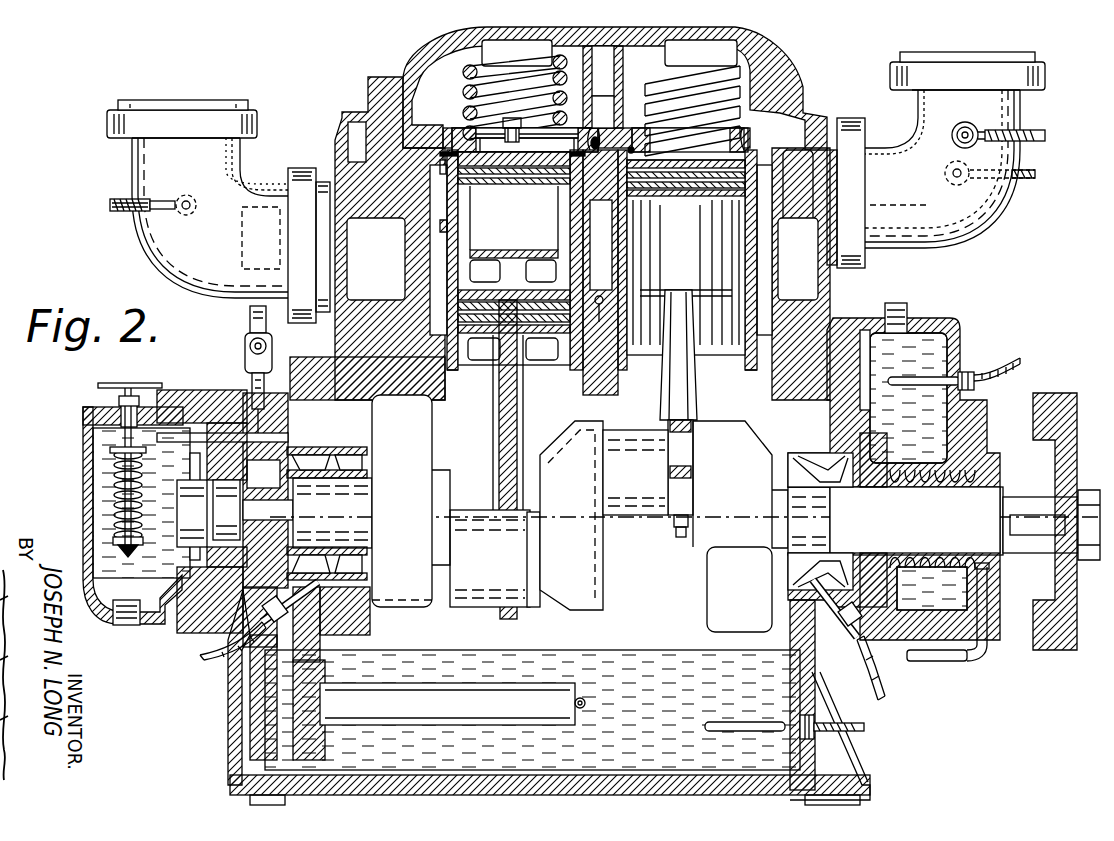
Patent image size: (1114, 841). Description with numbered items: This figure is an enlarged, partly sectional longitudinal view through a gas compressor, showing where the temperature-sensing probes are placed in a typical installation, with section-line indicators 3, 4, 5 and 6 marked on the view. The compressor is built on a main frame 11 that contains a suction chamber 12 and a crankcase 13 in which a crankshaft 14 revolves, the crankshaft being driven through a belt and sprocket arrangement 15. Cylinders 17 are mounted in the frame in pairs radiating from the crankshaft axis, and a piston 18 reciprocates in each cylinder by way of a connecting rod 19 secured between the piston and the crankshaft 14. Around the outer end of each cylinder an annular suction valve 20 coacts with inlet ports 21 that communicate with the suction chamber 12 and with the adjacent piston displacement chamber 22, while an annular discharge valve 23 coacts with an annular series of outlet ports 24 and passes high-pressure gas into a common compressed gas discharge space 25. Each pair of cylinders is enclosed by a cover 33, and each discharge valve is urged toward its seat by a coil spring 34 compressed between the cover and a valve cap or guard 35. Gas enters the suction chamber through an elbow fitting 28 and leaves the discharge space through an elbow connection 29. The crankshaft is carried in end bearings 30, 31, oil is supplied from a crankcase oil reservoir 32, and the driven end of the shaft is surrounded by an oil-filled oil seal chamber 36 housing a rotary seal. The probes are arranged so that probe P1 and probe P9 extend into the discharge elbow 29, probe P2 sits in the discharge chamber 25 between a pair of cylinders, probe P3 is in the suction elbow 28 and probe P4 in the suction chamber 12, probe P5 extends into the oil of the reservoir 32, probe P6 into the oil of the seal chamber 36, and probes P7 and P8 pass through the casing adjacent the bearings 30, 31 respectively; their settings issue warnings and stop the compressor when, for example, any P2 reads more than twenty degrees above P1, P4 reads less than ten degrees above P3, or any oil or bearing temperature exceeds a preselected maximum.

The section line 3- 3 is at (938, 22).
The section line 4- 4 is at (628, 115).
The section line 5- 5 is at (210, 60).
The section line 6- 6 is at (405, 250).
The main frame 11 is at (348, 118).
The suction chamber 12 is at (388, 308).
The crankcase 13 is at (602, 408).
The crankshaft 14 is at (580, 580).
The belt and sprocket arrangement 15 is at (1060, 446).
The cylinders 17 is at (445, 210).
The piston 18 is at (526, 248).
The connecting rod 19 is at (498, 398).
The annular suction valve 20 is at (440, 166).
The inlet ports 21 is at (462, 190).
The piston displacement chamber 22 is at (440, 226).
The annular discharge valve 23 is at (475, 128).
The outlet ports 24 is at (474, 170).
The compressed gas discharge space 25 is at (614, 82).
The elbow fitting 28 is at (145, 166).
The elbow connection 29 is at (1010, 166).
The end bearing 30 is at (374, 456).
The end bearing 31 is at (770, 572).
The crankcase oil reservoir 32 is at (522, 778).
The cover 33 is at (478, 32).
The coil spring 34 is at (462, 92).
The valve cap or guard 35 is at (594, 132).
The oil seal chamber 36 is at (915, 340).
The thermistor probe P1 is at (972, 185).
The thermistor probe P2 is at (636, 156).
The thermistor probe P3 is at (176, 212).
The thermistor probe P4 is at (600, 322).
The thermistor probe P5 is at (733, 722).
The thermistor probe P6 is at (928, 374).
The thermistor probe P7 is at (312, 606).
The thermistor probe P8 is at (818, 598).
The thermistor probe P9 is at (978, 124).